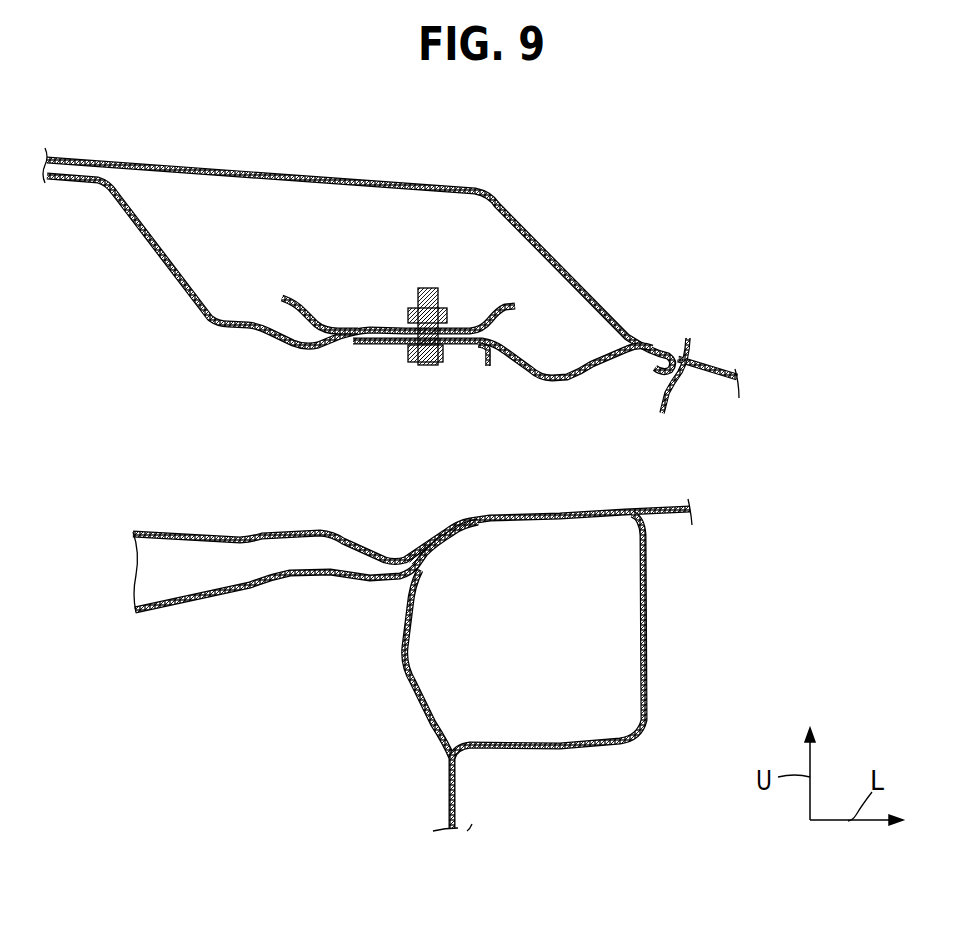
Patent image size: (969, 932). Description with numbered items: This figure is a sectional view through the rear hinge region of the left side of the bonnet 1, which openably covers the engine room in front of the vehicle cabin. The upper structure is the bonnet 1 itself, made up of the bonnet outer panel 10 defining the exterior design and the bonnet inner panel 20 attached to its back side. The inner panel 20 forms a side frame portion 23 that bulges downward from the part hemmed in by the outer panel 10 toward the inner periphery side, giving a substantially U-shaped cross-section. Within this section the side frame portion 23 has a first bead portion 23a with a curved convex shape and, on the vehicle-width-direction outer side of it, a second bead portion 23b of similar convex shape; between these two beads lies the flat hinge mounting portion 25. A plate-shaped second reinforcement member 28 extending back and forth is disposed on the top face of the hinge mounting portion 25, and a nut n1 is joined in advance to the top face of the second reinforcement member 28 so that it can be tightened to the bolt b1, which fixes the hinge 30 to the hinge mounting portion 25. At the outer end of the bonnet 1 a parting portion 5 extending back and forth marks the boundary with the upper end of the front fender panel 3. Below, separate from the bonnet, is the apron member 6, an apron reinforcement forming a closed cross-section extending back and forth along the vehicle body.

The bonnet 1 is at (423, 181).
The front fender panel 3 is at (718, 366).
The parting portion 5 is at (689, 338).
The apron member 6 is at (618, 505).
The bonnet outer panel 10 is at (528, 252).
The bonnet inner panel 20 is at (281, 324).
The side frame portion 23 is at (216, 331).
The first bead portion 23a is at (550, 381).
The second bead portion 23b is at (296, 346).
The hinge mounting portion 25 is at (498, 401).
The second reinforcement member 28 is at (305, 306).
The hinge 30 is at (456, 366).
The bolt b1 is at (416, 300).
The nut n1 is at (448, 312).